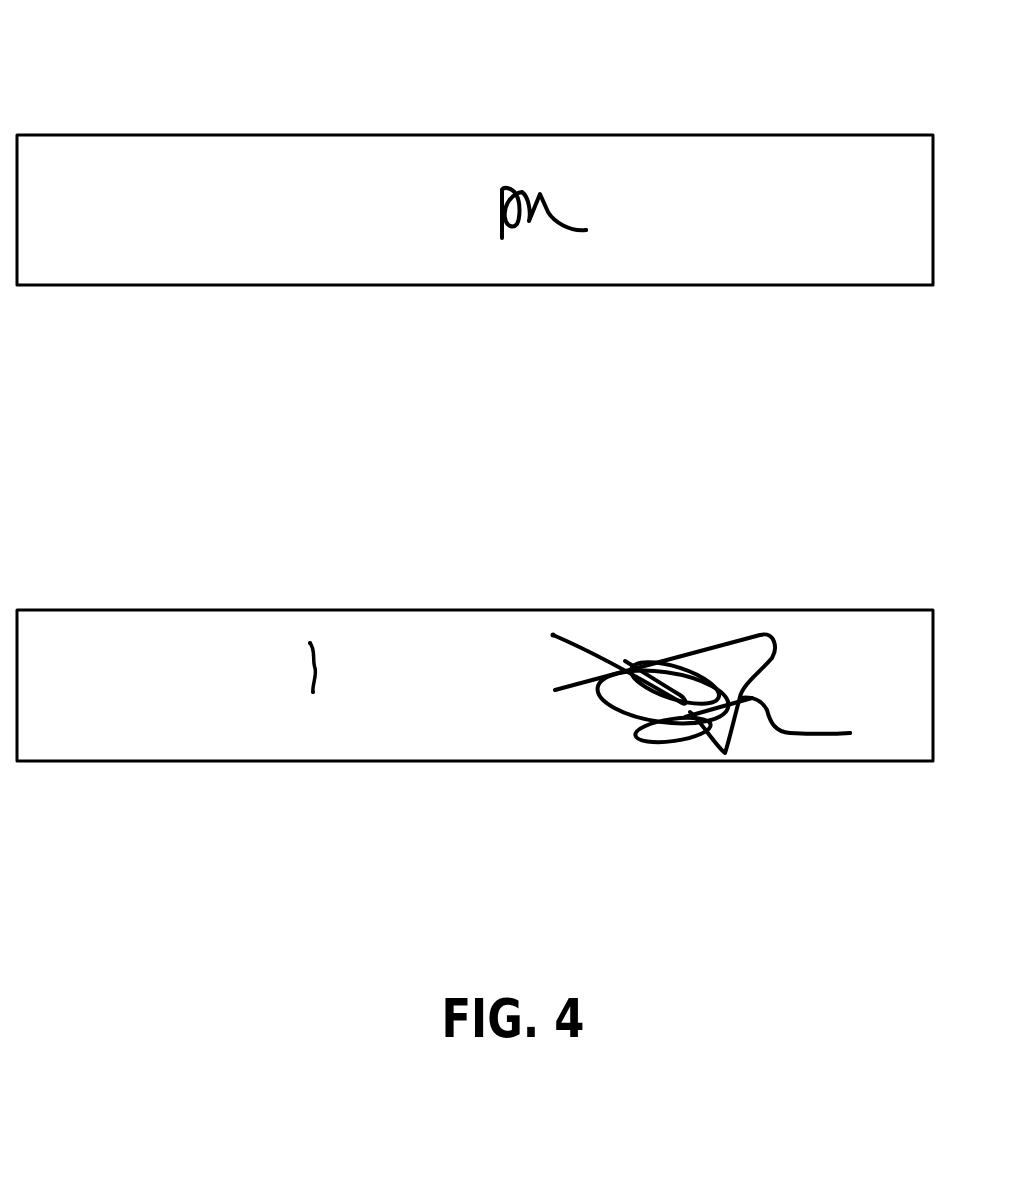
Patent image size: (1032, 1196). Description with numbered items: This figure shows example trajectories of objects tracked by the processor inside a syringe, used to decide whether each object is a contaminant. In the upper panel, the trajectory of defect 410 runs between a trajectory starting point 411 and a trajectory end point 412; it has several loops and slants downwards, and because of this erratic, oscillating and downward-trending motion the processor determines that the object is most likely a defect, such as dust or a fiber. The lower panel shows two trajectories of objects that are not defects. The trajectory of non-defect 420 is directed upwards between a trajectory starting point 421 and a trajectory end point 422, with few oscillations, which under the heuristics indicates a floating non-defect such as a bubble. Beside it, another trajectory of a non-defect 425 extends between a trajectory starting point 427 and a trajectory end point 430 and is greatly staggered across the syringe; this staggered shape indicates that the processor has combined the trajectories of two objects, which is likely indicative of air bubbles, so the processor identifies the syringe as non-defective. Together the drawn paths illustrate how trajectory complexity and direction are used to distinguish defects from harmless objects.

The trajectory of defect 410 is at (510, 230).
The trajectory starting point 411 is at (501, 186).
The trajectory end point 412 is at (590, 229).
The trajectory of non-defect 420 is at (317, 732).
The trajectory starting point 421 is at (313, 692).
The trajectory end point 422 is at (310, 643).
The trajectory of a non-defect 425 is at (682, 747).
The trajectory starting point 427 is at (555, 688).
The trajectory end point 430 is at (851, 732).